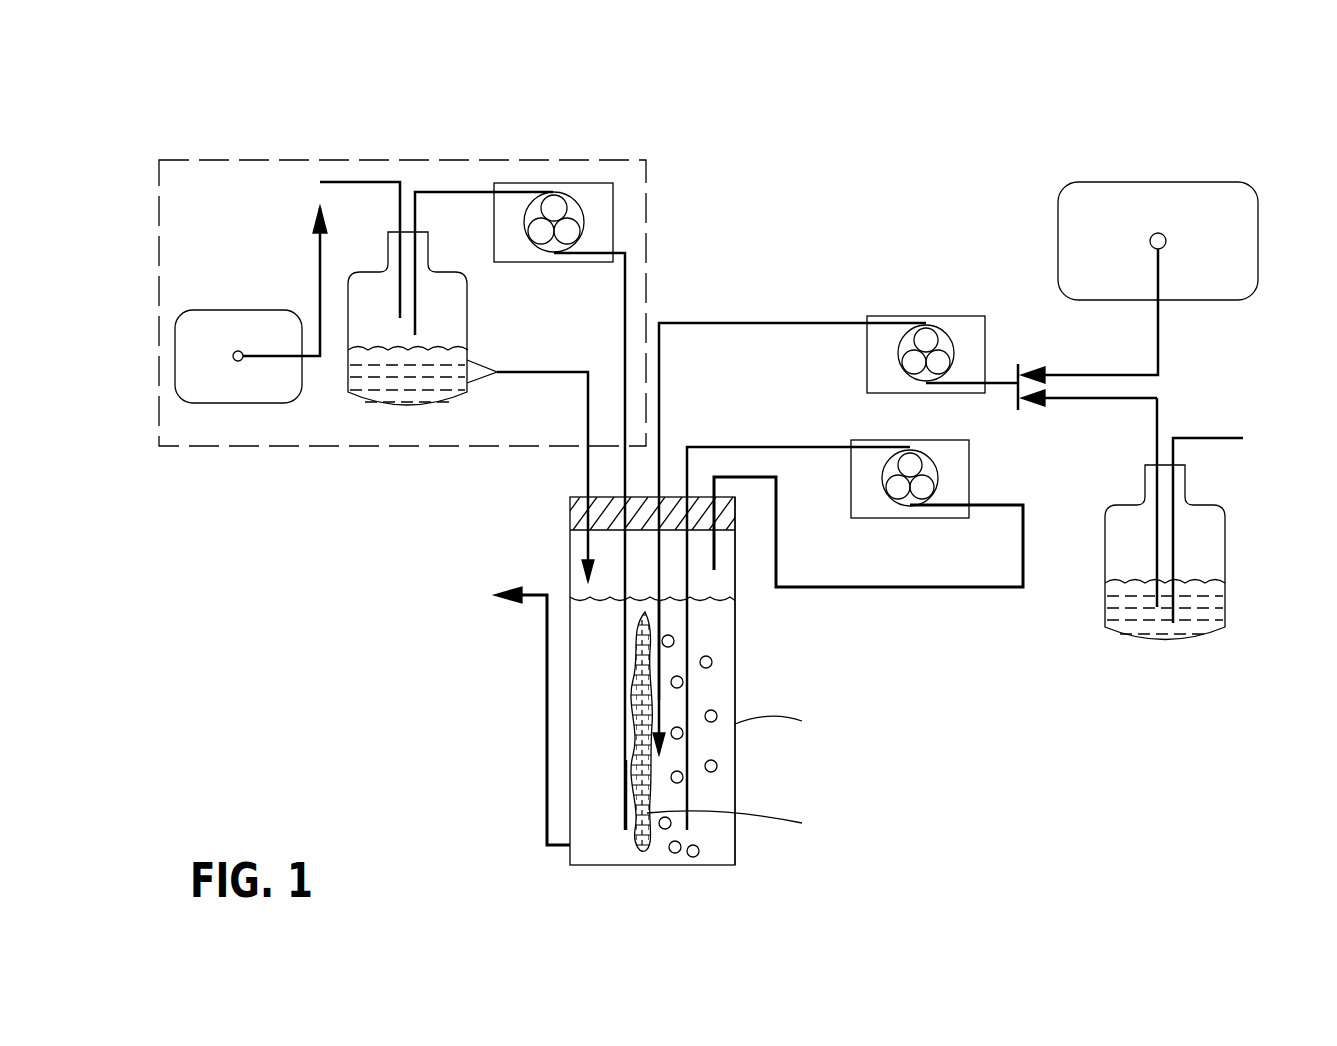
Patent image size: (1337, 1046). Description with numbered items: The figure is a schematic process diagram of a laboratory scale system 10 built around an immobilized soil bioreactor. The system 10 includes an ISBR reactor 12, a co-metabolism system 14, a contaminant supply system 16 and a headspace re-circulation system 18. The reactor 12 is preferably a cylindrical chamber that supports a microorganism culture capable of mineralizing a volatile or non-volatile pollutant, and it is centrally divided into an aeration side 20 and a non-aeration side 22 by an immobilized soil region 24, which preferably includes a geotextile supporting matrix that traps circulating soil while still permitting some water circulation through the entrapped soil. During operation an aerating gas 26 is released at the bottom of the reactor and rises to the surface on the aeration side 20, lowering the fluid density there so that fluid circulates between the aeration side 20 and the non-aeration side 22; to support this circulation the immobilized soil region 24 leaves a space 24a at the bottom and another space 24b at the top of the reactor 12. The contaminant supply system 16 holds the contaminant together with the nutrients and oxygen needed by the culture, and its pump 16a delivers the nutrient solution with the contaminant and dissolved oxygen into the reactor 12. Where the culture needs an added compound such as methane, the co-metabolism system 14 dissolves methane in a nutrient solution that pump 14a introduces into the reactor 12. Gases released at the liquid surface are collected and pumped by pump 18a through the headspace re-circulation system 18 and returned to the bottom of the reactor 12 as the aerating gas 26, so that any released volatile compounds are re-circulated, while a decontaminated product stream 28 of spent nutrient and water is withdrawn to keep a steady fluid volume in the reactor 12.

The system 10 is at (742, 185).
The ISBR reactor 12 is at (735, 823).
The co-metabolism system 14 is at (517, 160).
The pump 14a is at (510, 247).
The contaminant supply system 16 is at (1257, 140).
The pump 16a is at (955, 315).
The headspace re-circulation system 18 is at (1005, 640).
The pump 18a is at (970, 480).
The aeration side 20 is at (720, 745).
The non-aeration side 22 is at (587, 725).
The immobilized soil region 24 is at (647, 705).
The space 24a is at (617, 843).
The space 24b is at (646, 607).
The aerating gas 26 is at (698, 848).
The decontaminated product stream 28 is at (498, 598).